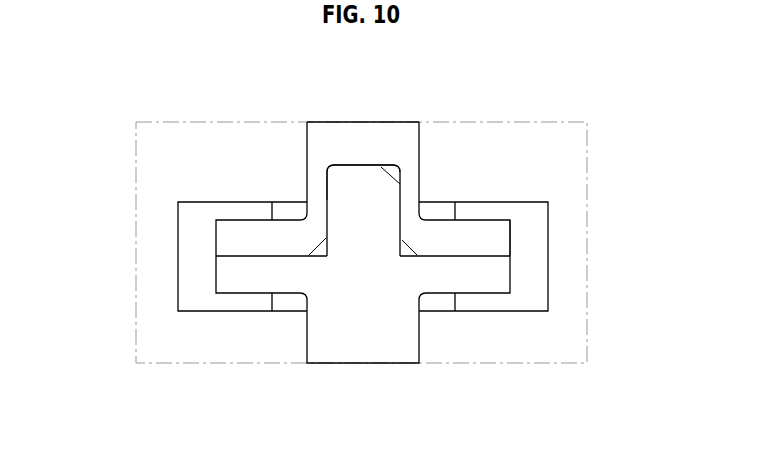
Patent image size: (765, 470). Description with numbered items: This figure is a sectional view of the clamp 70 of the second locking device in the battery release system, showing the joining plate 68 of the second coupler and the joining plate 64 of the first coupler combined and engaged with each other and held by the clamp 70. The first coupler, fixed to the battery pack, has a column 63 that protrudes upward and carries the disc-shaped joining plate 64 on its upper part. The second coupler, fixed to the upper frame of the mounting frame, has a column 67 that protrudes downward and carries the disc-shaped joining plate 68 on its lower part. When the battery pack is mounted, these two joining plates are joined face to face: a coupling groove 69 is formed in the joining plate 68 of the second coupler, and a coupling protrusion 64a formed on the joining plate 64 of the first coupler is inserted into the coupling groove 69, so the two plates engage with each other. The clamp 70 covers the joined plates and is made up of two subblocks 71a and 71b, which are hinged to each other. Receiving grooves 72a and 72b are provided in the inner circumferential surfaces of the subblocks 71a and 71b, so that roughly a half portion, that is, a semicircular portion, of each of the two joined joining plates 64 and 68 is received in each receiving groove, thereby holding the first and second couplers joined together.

The clamp 70 is at (166, 303).
The subblock 71a is at (178, 268).
The subblock 71b is at (548, 277).
The receiving groove 72a is at (215, 237).
The receiving groove 72b is at (514, 241).
The column 67 is at (419, 143).
The column 63 is at (419, 345).
The joining plate 64 is at (487, 280).
The coupling protrusion 64a is at (361, 183).
The coupling groove 69 is at (333, 186).
The joining plate 68 is at (477, 229).